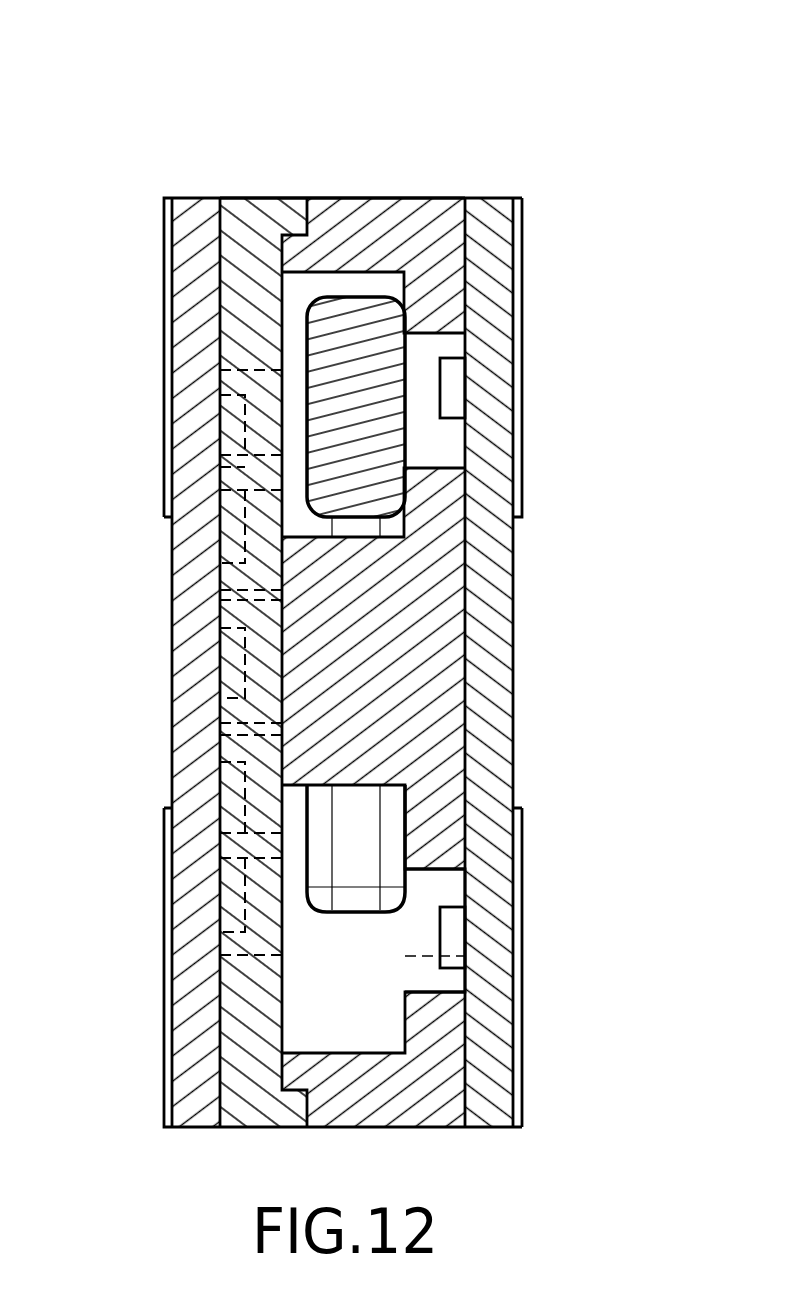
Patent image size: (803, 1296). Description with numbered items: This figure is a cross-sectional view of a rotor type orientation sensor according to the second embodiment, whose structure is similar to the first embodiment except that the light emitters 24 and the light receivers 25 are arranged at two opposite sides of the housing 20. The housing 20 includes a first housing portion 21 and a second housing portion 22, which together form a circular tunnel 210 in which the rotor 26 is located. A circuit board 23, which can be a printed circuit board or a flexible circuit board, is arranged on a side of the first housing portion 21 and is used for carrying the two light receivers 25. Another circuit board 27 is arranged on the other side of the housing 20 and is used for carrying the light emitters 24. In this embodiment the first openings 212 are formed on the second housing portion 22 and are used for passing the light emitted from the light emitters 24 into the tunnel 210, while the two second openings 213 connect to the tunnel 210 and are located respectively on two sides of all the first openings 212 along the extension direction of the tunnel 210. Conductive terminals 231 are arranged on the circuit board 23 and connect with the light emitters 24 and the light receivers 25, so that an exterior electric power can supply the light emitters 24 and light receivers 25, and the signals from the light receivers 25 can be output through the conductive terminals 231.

The housing 20 is at (392, 66).
The first housing portion 21 is at (368, 215).
The second housing portion 22 is at (245, 215).
The circuit board 23 is at (492, 652).
The conductive terminals 231 is at (523, 357).
The light emitters 24 is at (227, 790).
The light receivers 25 is at (453, 942).
The rotor 26 is at (340, 422).
The circuit board 27 is at (200, 287).
The tunnel 210 is at (310, 982).
The first openings 212 is at (227, 707).
The second openings 213 is at (412, 980).